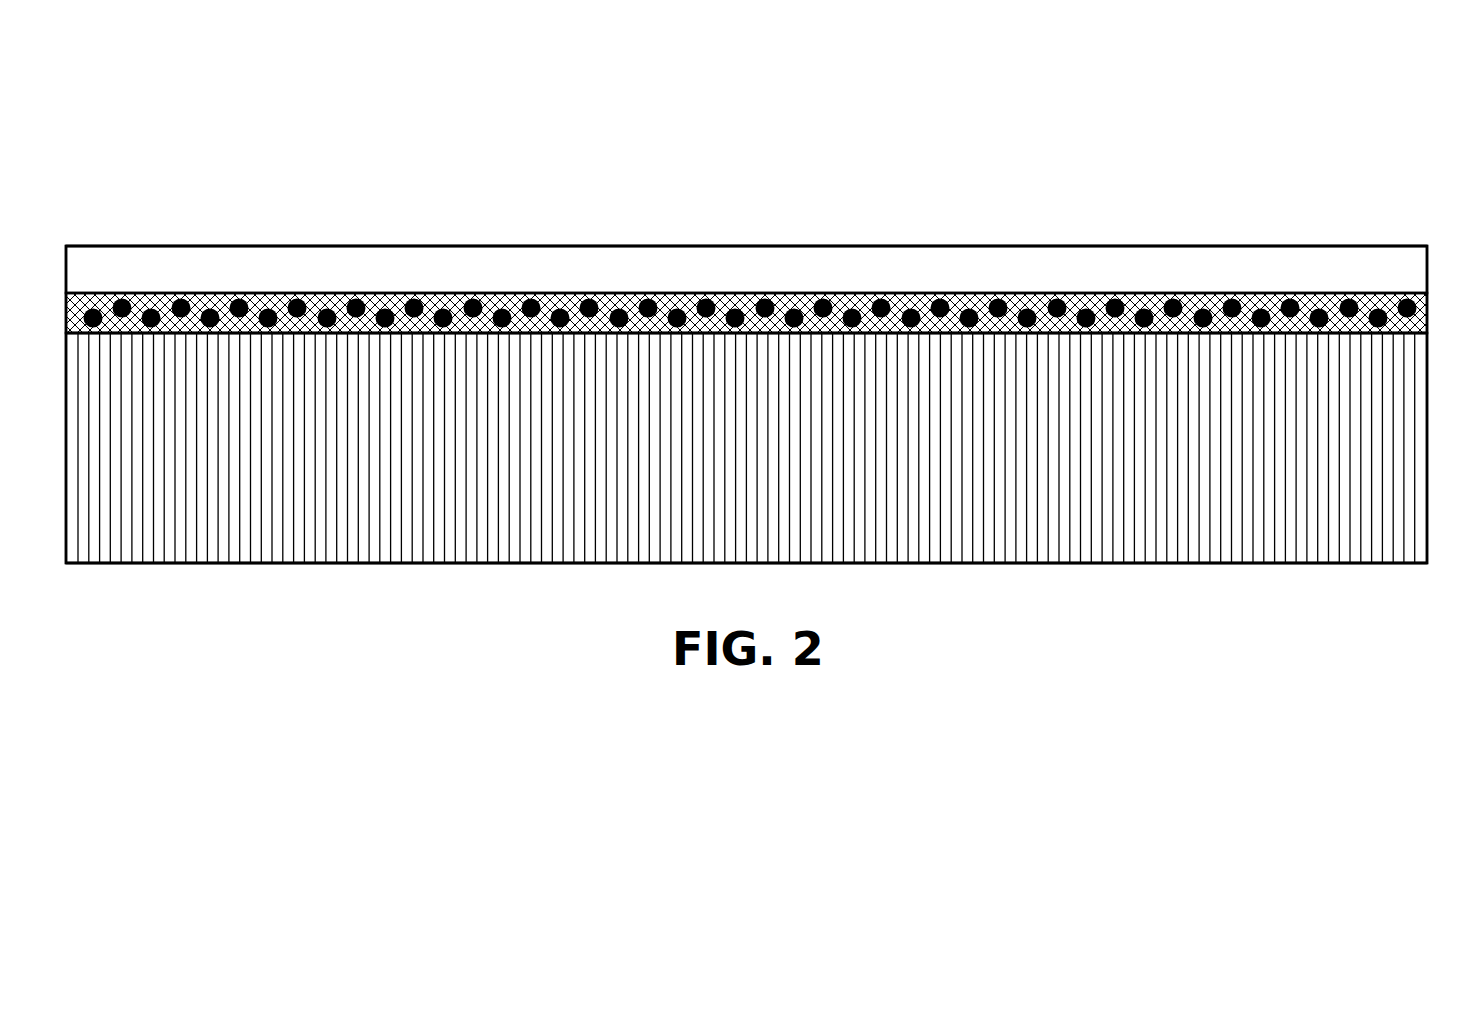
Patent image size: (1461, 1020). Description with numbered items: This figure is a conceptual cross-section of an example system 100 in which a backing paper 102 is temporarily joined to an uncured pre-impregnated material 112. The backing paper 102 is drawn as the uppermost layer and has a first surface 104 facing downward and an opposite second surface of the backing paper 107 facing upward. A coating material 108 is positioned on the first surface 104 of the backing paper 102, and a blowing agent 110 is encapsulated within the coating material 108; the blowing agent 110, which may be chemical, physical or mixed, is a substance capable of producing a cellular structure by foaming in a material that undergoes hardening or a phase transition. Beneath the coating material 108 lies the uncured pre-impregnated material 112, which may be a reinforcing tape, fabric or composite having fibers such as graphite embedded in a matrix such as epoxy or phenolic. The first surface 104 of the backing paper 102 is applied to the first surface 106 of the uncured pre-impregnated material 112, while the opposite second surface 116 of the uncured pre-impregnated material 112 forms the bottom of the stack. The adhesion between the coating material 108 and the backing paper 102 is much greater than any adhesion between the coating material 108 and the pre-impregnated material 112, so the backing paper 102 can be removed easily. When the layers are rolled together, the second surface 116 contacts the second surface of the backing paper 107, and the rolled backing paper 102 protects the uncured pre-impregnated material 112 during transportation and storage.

The system 100 is at (212, 86).
The backing paper 102 is at (660, 258).
The first surface 104 is at (1359, 288).
The first surface of the uncured pre-impregnated material 106 is at (1375, 345).
The second surface of the backing paper 107 is at (1047, 238).
The coating material 108 is at (430, 300).
The blowing agent 110 is at (243, 300).
The uncured pre-impregnated material 112 is at (432, 545).
The second surface of the uncured pre-impregnated material 116 is at (1118, 572).